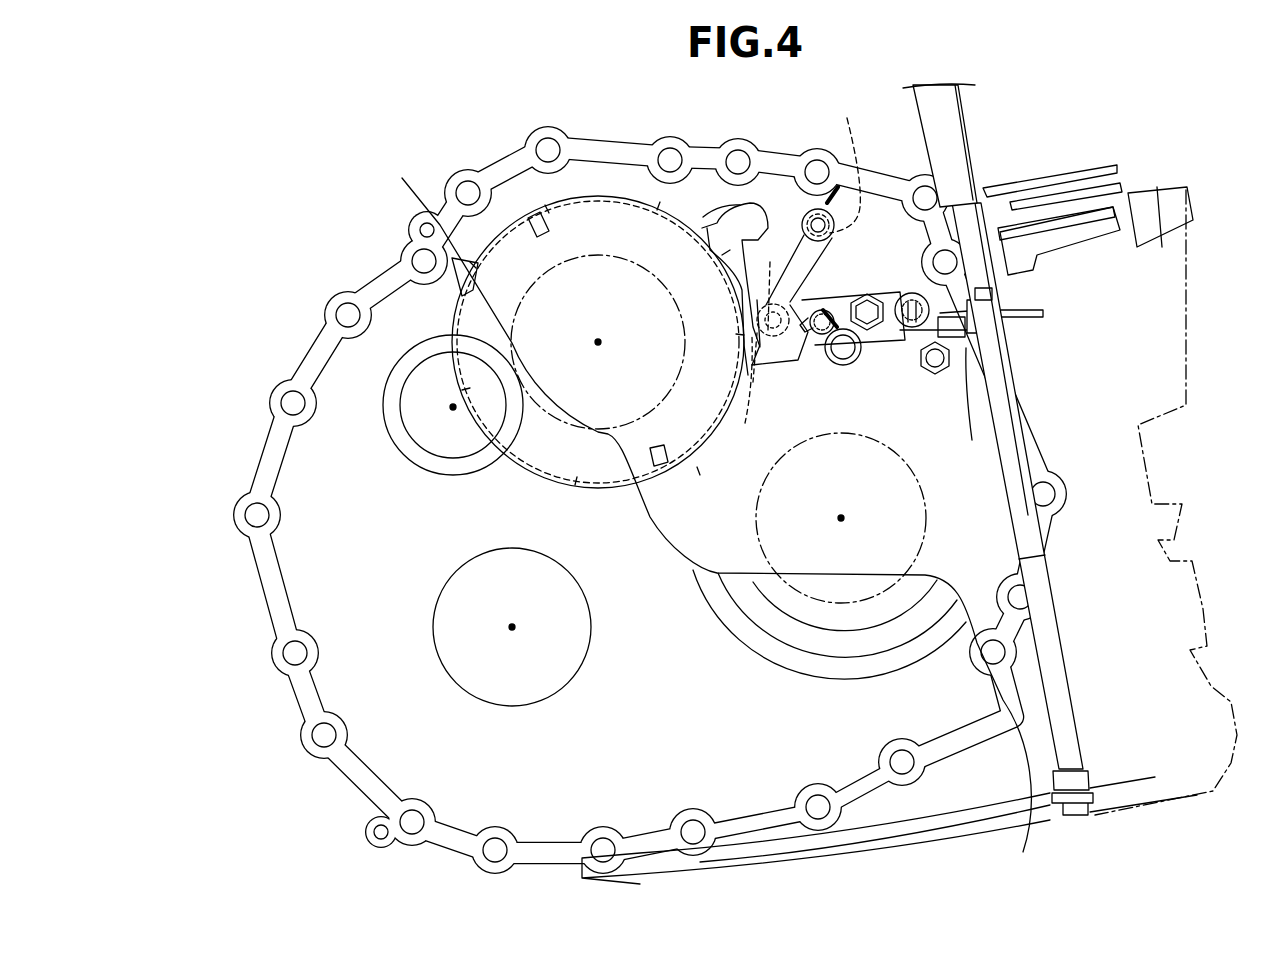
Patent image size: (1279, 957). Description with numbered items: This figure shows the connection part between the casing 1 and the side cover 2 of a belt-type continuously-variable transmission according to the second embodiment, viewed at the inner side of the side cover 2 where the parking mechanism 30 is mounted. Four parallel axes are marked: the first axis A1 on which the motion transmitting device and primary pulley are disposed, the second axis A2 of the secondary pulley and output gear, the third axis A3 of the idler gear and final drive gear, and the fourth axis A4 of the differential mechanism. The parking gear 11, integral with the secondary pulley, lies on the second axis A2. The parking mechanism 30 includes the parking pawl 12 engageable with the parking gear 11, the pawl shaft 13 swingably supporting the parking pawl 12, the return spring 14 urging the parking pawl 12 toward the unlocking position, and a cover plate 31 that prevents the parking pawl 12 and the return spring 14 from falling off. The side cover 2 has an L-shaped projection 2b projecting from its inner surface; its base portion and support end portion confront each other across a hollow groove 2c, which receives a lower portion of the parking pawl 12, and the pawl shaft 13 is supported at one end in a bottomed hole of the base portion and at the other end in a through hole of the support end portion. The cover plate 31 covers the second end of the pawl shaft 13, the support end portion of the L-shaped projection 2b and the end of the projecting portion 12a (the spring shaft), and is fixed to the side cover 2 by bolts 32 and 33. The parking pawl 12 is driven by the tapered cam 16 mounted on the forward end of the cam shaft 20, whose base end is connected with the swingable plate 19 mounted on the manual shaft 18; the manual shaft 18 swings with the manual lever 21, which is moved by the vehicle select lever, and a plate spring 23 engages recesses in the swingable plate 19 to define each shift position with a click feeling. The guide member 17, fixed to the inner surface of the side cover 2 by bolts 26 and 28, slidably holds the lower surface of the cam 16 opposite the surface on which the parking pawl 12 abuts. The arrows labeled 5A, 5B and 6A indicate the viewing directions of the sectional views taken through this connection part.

The transmission case 1 is at (315, 338).
The side cover 2 is at (722, 195).
The parking gear 11 is at (555, 190).
The parking pawl 12 is at (766, 200).
The lever arm end 12a is at (702, 227).
The pawl shaft 13 is at (742, 393).
The return spring 14 is at (846, 164).
The cam 16 is at (977, 298).
The guide member 17 is at (912, 350).
The manual shaft 18 is at (1016, 464).
The swingable plate 19 is at (1023, 307).
The cam shaft 20 is at (883, 343).
The manual lever 21 is at (1013, 188).
The plate spring 23 is at (972, 408).
The bolt 26 is at (863, 364).
The bolt 28 is at (937, 385).
The parking mechanism 30 is at (1077, 130).
The cover plate 31 is at (727, 277).
The bolt 32 is at (812, 209).
The bolt 33 is at (825, 340).
The L-shaped projection 2b is at (790, 340).
The hollow groove 2c is at (771, 360).
The section line 5A is at (868, 127).
The section line 5B is at (850, 204).
The section line 6A is at (1001, 138).
The first axis A1 is at (841, 518).
The second axis A2 is at (598, 342).
The third axis A3 is at (453, 407).
The fourth axis A4 is at (512, 627).